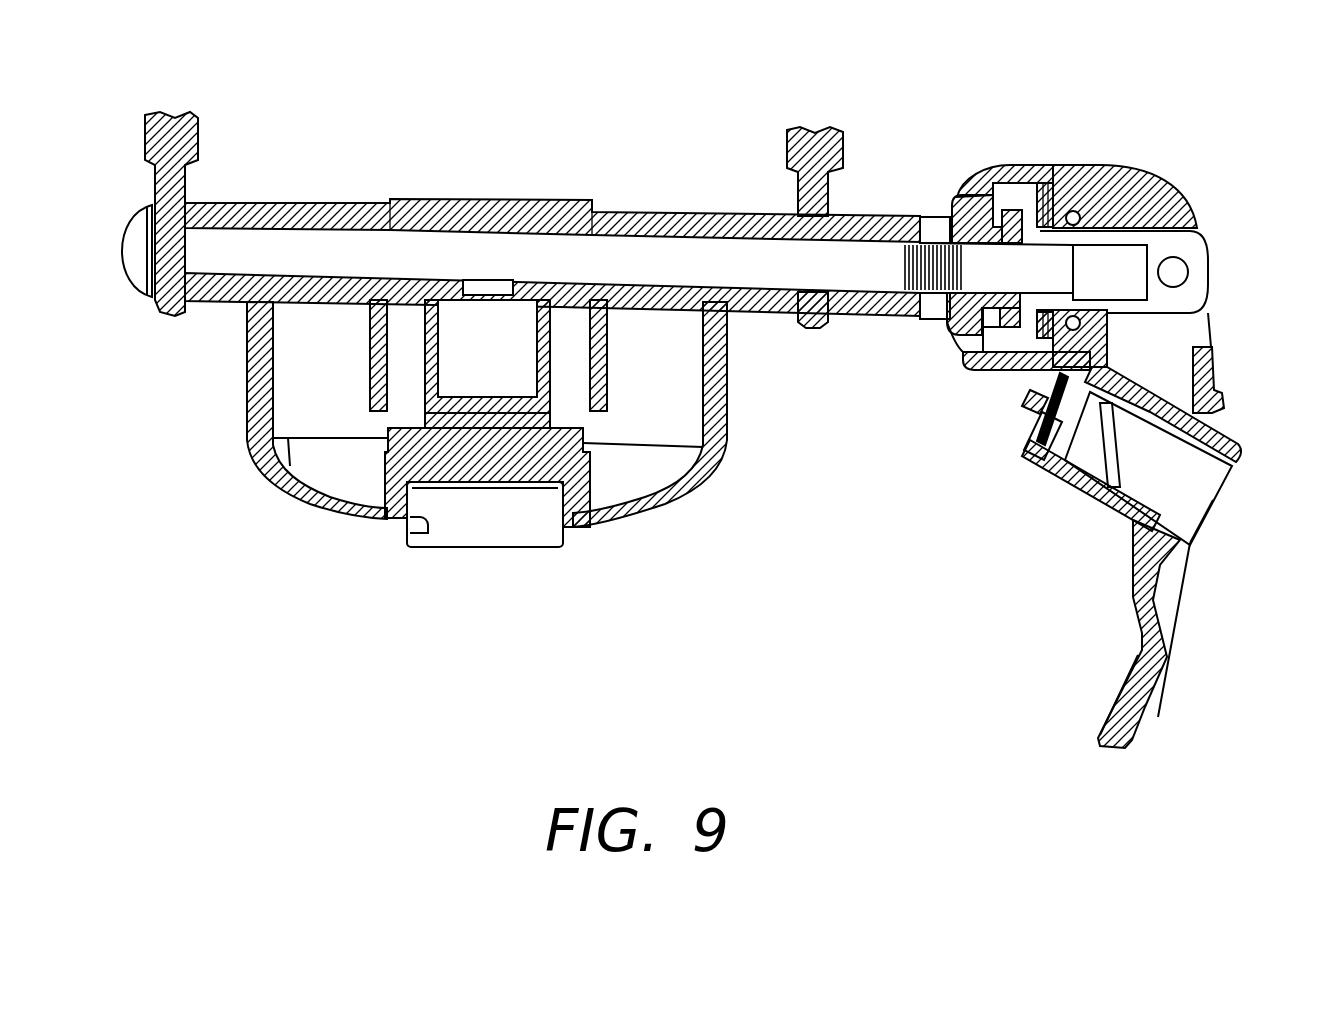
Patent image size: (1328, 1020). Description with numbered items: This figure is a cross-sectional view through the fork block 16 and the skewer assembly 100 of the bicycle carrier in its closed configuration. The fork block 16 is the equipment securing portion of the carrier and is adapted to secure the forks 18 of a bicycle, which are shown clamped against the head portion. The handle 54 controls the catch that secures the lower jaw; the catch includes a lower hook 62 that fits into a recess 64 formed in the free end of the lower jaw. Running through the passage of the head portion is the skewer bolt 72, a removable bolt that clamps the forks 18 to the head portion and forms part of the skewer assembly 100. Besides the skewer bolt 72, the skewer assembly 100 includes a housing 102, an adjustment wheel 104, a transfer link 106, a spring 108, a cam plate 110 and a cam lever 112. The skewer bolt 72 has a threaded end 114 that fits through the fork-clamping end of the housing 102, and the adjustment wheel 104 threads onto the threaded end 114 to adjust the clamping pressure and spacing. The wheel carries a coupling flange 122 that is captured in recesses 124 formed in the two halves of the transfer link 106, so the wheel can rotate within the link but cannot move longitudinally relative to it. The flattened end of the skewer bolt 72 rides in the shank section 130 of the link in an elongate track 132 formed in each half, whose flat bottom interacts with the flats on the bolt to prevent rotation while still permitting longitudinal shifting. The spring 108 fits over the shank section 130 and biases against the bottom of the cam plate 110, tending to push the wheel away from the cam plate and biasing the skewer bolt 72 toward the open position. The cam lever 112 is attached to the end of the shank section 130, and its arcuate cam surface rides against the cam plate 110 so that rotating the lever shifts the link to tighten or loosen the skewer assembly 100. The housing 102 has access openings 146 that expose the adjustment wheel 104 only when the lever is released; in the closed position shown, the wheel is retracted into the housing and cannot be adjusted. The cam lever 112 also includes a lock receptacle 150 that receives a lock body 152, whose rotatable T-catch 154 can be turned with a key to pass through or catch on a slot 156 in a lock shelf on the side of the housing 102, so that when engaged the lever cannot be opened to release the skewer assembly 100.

The fork block 16 is at (468, 449).
The forks 18 is at (200, 130).
The handle 54 is at (515, 193).
The lower hook 62 is at (536, 547).
The recess 64 is at (430, 533).
The skewer bolt 72 is at (128, 282).
The skewer assembly 100 is at (1083, 404).
The housing 102 is at (1077, 158).
The adjustment wheel 104 is at (953, 195).
The transfer link 106 is at (1102, 325).
The spring 108 is at (1050, 180).
The cam plate 110 is at (1163, 170).
The cam lever 112 is at (1232, 420).
The threaded end 114 is at (935, 217).
The coupling flange 122 is at (995, 370).
The recesses 124 is at (988, 185).
The shank section 130 is at (1150, 231).
The elongate track 132 is at (1136, 288).
The access openings 146 is at (957, 200).
The lock receptacle 150 is at (1125, 548).
The lock body 152 is at (1122, 459).
The T-catch 154 is at (1024, 406).
The slot 156 is at (1024, 452).